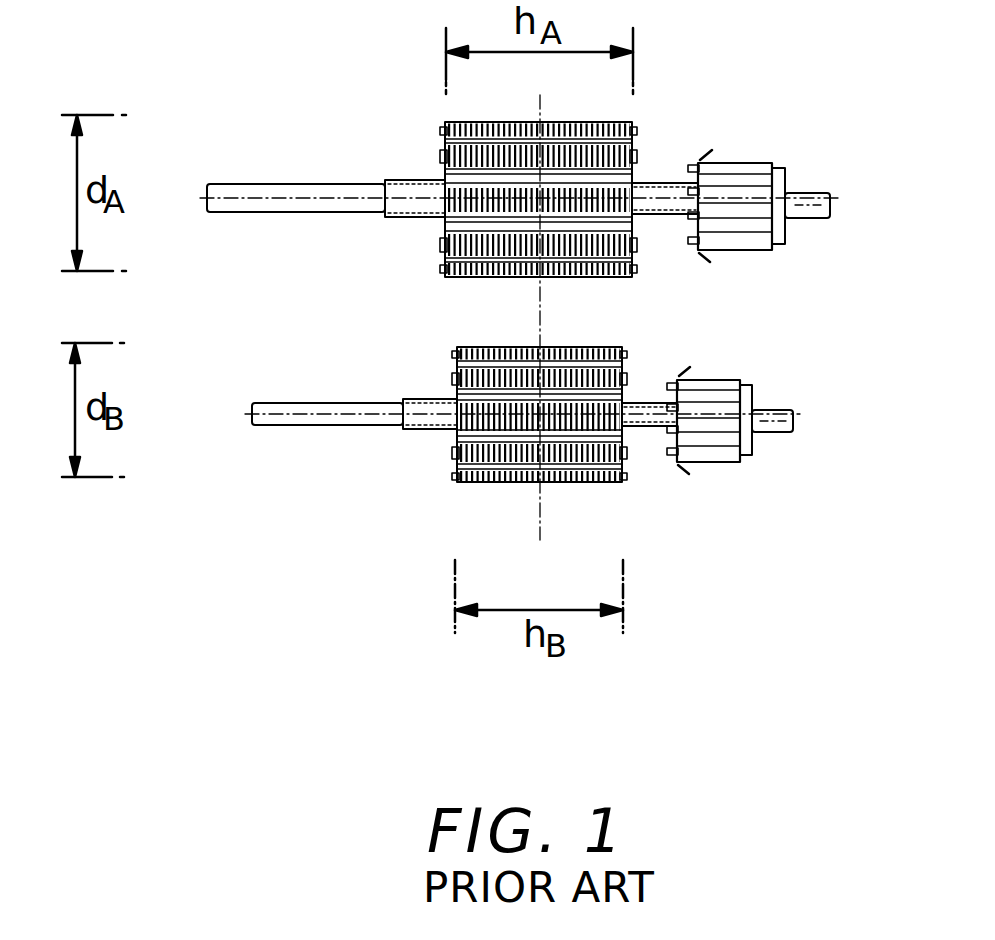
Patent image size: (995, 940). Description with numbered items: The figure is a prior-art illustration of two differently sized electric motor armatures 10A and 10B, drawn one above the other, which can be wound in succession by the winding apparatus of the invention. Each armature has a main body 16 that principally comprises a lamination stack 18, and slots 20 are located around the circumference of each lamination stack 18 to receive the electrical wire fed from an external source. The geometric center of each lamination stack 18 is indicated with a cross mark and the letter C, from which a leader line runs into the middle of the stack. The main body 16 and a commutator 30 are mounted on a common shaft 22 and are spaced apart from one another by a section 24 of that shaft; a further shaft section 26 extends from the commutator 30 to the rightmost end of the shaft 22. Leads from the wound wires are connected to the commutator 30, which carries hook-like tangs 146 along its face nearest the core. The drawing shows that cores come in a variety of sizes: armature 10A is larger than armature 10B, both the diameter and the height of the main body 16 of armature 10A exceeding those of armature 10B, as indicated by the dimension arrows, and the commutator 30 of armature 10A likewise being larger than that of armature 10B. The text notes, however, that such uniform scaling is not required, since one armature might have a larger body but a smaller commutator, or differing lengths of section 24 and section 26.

The armature 10A is at (800, 36).
The armature 10B is at (900, 320).
The main body 16 is at (574, 279).
The lamination stack 18 is at (448, 277).
The slots 20 is at (446, 141).
The shaft 22 is at (272, 213).
The section 24 is at (657, 188).
The shaft section 26 is at (813, 193).
The commutator 30 is at (738, 175).
The commutator hooks 146 is at (700, 257).
The geometric center C is at (543, 199).